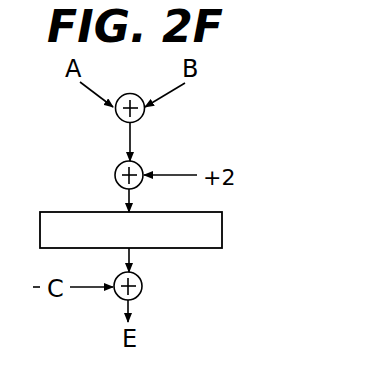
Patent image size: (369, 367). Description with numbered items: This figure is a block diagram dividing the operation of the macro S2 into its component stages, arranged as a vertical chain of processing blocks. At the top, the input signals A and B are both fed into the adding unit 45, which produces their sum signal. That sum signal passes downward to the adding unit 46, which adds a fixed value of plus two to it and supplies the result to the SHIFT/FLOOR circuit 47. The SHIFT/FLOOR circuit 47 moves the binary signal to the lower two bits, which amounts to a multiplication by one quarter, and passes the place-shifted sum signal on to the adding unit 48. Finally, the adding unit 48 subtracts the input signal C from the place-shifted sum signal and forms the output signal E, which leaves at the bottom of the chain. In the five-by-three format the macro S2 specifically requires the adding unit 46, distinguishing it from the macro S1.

The adding unit 45 is at (146, 113).
The adding unit 46 is at (140, 164).
The SHIFT/FLOOR circuit 47 is at (222, 230).
The adding unit 48 is at (142, 287).